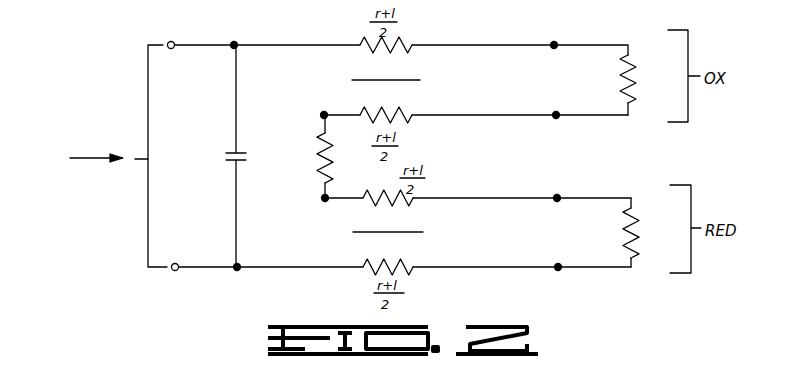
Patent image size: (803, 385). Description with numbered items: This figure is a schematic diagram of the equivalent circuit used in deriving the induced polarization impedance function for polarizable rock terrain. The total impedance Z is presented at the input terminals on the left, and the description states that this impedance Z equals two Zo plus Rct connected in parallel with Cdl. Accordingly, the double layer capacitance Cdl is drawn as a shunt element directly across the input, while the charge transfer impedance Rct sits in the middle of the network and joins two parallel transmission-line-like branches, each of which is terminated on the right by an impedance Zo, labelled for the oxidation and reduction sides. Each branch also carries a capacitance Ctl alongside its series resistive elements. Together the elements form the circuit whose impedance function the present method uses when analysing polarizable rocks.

The impedance function Z is at (87, 158).
The double layer capacitance Cdl is at (217, 156).
The transmission line capacitance Ctl is at (400, 160).
The charge transfer impedance Rct is at (309, 156).
The terminating impedance Zo is at (641, 161).